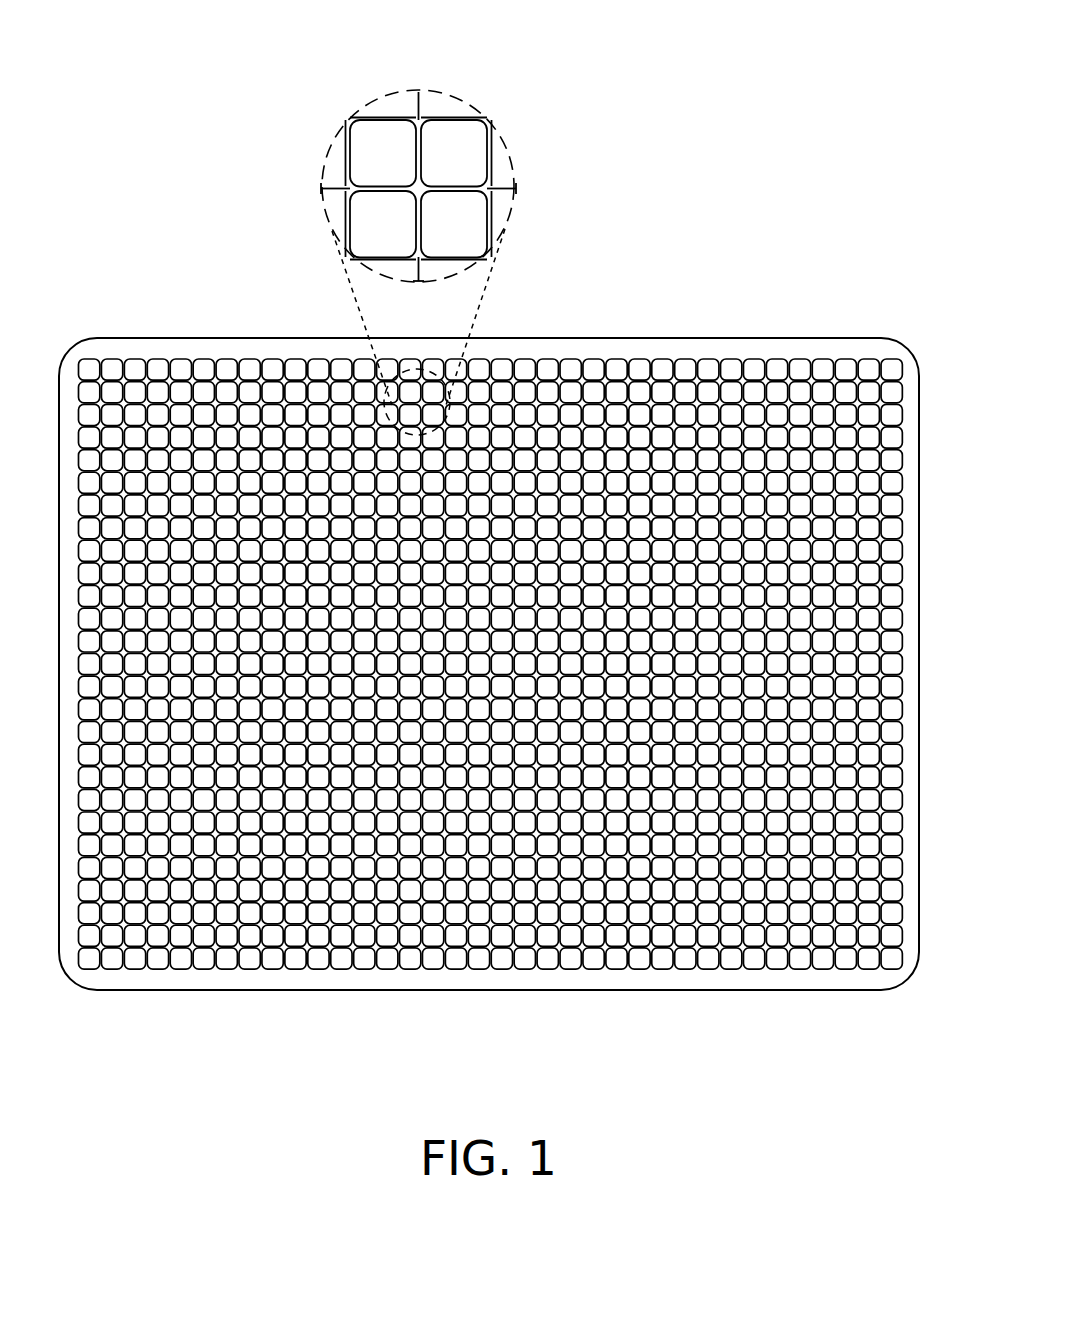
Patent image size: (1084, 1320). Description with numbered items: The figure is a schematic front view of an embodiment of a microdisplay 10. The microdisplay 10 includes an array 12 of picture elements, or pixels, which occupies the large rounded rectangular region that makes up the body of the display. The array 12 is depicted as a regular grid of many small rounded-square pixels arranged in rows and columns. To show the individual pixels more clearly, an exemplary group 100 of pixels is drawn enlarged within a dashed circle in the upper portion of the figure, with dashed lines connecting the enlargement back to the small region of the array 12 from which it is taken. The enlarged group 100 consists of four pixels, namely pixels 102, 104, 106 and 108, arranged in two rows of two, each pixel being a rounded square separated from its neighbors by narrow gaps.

The microdisplay 10 is at (507, 652).
The array 12 is at (380, 997).
The group of pixels 100 is at (444, 239).
The pixel 102 is at (407, 166).
The pixel 104 is at (478, 166).
The pixel 106 is at (407, 236).
The pixel 108 is at (478, 236).